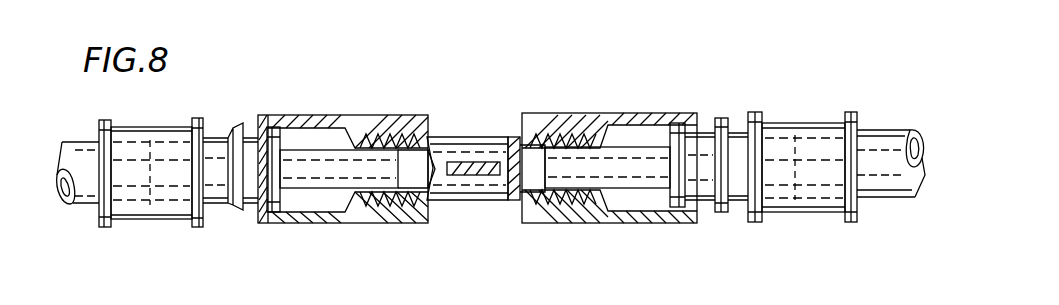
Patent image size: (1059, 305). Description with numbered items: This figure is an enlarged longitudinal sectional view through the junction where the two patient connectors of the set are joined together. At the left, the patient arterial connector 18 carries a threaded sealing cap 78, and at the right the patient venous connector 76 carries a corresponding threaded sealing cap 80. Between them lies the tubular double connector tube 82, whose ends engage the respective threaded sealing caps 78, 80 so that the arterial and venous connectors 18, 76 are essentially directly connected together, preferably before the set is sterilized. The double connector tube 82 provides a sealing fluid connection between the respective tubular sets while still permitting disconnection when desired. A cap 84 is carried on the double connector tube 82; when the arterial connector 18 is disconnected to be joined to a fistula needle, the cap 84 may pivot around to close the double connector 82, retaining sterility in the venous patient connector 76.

The patient arterial connector 18 is at (150, 219).
The threaded sealing cap 78 is at (333, 117).
The tubular double connector tube 82 is at (486, 156).
The cap 84 is at (478, 172).
The threaded sealing cap 80 is at (630, 113).
The patient venous connector 76 is at (800, 123).